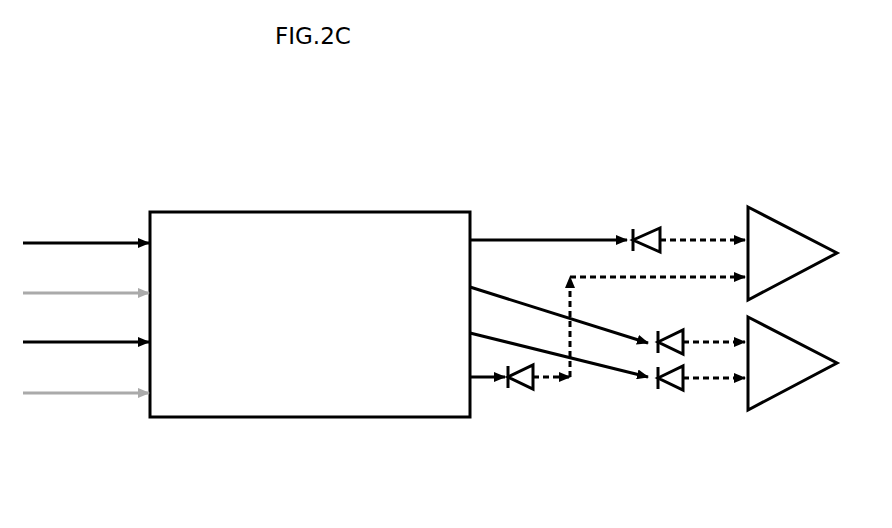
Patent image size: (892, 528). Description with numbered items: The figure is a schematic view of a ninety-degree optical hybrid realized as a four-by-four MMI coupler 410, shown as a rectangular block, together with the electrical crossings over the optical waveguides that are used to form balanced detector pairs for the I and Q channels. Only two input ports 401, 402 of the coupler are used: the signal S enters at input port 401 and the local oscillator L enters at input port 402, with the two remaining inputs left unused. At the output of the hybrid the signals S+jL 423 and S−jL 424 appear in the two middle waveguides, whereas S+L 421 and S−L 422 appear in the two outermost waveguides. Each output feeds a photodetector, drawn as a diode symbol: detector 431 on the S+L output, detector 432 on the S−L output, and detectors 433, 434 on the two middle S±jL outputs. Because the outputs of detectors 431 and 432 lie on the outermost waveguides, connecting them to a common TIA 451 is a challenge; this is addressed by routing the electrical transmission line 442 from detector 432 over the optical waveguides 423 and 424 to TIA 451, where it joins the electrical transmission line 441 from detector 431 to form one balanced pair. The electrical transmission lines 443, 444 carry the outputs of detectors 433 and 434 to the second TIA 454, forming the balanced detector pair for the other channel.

The input port 401 is at (125, 243).
The input port 402 is at (50, 348).
The 4×4 MMI coupler 410 is at (305, 212).
The S+L output 421 is at (538, 240).
The S−L output 422 is at (490, 372).
The S+jL output waveguide 423 is at (623, 380).
The S−jL output waveguide 424 is at (628, 380).
The photodetector 431 is at (646, 228).
The photodetector 432 is at (530, 390).
The photodetector 433 is at (665, 332).
The photodetector 434 is at (670, 390).
The electrical transmission line 441 is at (695, 238).
The electrical transmission line 442 is at (560, 305).
The electrical transmission line 443 is at (718, 341).
The electrical transmission line 444 is at (705, 382).
The TIA 451 is at (777, 218).
The TIA 454 is at (783, 392).